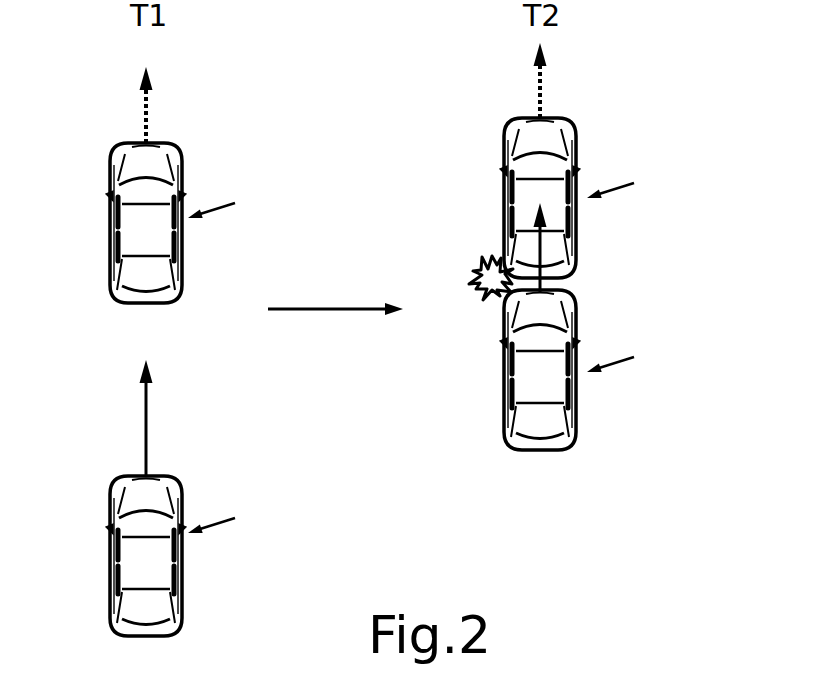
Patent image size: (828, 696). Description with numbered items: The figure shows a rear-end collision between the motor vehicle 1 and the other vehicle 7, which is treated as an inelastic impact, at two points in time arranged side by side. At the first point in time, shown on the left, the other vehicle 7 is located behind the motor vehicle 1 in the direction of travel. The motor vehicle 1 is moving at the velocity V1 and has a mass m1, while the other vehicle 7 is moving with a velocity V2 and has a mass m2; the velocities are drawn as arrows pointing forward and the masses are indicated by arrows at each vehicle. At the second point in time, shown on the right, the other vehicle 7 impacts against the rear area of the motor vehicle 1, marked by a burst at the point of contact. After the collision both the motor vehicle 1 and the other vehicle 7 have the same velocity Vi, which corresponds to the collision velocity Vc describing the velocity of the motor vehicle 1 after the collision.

The motor vehicle 1 is at (110, 173).
The other vehicle 7 is at (112, 583).
The velocity of the motor vehicle V1 is at (147, 110).
The velocity of the other vehicle V2 is at (148, 423).
The mass of the motor vehicle m1 is at (431, 194).
The mass of the other vehicle m2 is at (431, 438).
The collision velocity Vc is at (540, 90).
The velocity after the collision Vi is at (543, 245).